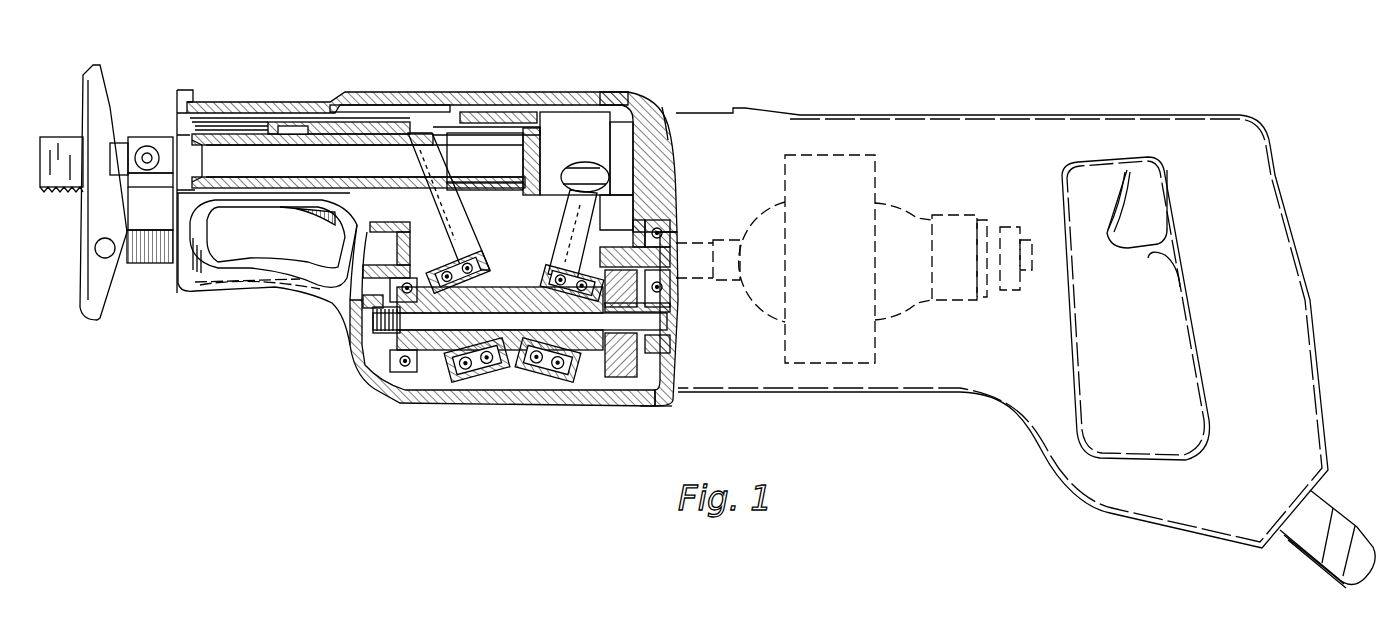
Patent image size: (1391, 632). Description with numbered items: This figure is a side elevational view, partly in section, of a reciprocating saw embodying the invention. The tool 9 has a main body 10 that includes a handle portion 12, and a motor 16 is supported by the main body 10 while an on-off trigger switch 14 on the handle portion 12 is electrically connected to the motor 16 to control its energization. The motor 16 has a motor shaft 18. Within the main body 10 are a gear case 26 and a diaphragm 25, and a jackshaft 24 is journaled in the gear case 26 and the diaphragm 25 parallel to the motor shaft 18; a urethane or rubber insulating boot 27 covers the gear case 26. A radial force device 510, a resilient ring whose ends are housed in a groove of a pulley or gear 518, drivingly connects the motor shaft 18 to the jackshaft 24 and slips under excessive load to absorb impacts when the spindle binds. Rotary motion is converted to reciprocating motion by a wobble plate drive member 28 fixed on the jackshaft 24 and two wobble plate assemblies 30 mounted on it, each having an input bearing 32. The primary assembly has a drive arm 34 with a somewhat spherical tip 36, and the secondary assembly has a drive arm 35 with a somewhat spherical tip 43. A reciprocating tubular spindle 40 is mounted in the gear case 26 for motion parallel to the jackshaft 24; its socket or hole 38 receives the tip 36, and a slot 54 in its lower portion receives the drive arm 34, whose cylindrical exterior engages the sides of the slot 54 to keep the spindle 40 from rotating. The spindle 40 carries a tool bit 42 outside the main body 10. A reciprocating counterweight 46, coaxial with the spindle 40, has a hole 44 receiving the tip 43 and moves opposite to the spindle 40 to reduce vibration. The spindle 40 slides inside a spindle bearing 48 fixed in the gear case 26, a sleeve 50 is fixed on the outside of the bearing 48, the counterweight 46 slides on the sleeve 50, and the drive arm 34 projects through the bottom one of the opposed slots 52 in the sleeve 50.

The tool 9 is at (963, 420).
The main body 10 is at (900, 98).
The handle portion 12 is at (1198, 332).
The on-off trigger switch 14 is at (1122, 196).
The motor 16 is at (880, 168).
The motor shaft 18 is at (700, 242).
The jackshaft 24 is at (385, 325).
The diaphragm 25 is at (658, 406).
The gear case 26 is at (590, 97).
The insulating boot 27 is at (655, 105).
The wobble plate drive member 28 is at (517, 287).
The wobble plate assemblies 30 is at (483, 250).
The input bearing 32 is at (487, 375).
The drive arm 34 is at (425, 161).
The drive arm 35 is at (603, 222).
The spherical tip 36 is at (433, 130).
The socket or hole 38 is at (417, 133).
The reciprocating tubular spindle 40 is at (220, 140).
The tool bit 42 is at (75, 137).
The spherical tip 43 is at (572, 188).
The hole 44 is at (600, 175).
The reciprocating counterweight 46 is at (533, 107).
The spindle bearing 48 is at (297, 130).
The sleeve 50 is at (363, 120).
The slots 52 is at (493, 113).
The slot 54 is at (372, 220).
The radial force device 510 is at (640, 316).
The pulley or gear 518 is at (640, 356).